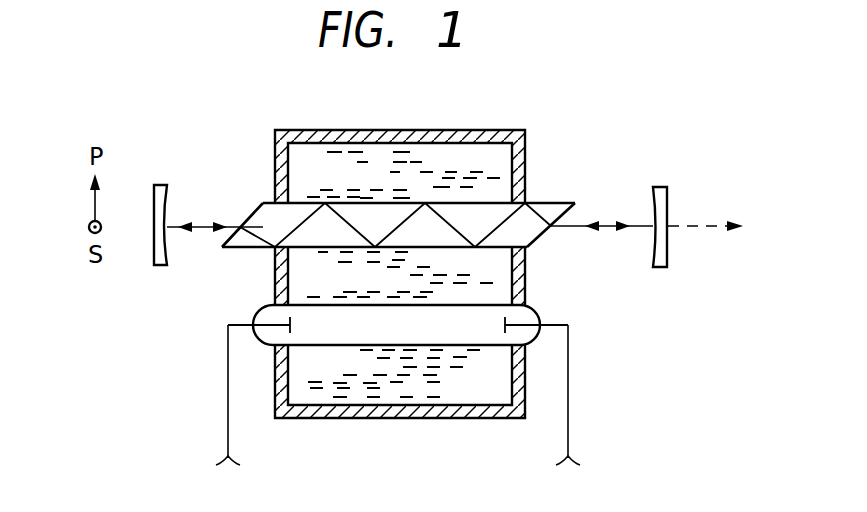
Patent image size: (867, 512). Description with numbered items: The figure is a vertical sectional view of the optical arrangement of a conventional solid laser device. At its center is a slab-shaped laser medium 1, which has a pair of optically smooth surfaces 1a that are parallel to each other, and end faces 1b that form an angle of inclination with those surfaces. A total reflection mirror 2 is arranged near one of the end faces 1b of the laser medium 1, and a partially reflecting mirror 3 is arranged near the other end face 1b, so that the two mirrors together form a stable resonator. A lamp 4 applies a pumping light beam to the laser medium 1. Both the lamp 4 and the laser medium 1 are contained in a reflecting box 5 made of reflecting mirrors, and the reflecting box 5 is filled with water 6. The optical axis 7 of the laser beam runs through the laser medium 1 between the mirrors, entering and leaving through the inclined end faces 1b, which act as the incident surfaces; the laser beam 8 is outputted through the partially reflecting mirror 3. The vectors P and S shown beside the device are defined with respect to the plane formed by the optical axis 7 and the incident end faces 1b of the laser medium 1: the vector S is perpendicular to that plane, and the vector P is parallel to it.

The slab-shaped laser medium 1 is at (411, 199).
The optically smooth surfaces 1a is at (380, 200).
The end faces 1b is at (277, 235).
The total reflection mirror 2 is at (165, 185).
The partially reflecting mirror 3 is at (662, 186).
The lamp 4 is at (258, 308).
The reflecting box 5 is at (420, 403).
The water 6 is at (453, 158).
The optical axis 7 is at (205, 225).
The laser beam 8 is at (706, 230).